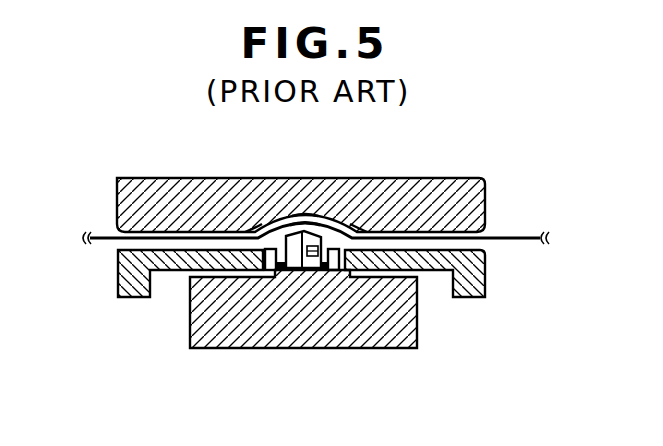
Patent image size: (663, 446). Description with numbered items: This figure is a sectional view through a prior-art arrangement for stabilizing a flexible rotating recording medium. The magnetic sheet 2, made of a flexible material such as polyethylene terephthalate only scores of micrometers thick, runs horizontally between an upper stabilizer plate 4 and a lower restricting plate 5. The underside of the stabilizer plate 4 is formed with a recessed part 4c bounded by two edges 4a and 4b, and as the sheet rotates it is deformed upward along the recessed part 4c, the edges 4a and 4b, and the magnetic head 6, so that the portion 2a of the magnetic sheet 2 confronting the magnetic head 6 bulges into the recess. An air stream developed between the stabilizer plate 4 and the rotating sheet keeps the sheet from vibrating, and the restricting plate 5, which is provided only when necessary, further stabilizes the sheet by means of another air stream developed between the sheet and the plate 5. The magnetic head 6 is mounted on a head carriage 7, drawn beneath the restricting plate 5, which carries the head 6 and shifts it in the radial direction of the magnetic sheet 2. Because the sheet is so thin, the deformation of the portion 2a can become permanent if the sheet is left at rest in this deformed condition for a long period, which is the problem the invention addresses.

The magnetic sheet 2 is at (512, 238).
The portion of the magnetic sheet 2a is at (337, 232).
The stabilizer plate 4 is at (440, 208).
The edge of the recessed part 4a is at (255, 225).
The edge of the recessed part 4b is at (357, 222).
The recessed part 4c is at (310, 215).
The restricting plate 5 is at (483, 278).
The magnetic head 6 is at (322, 268).
The head carriage 7 is at (267, 317).